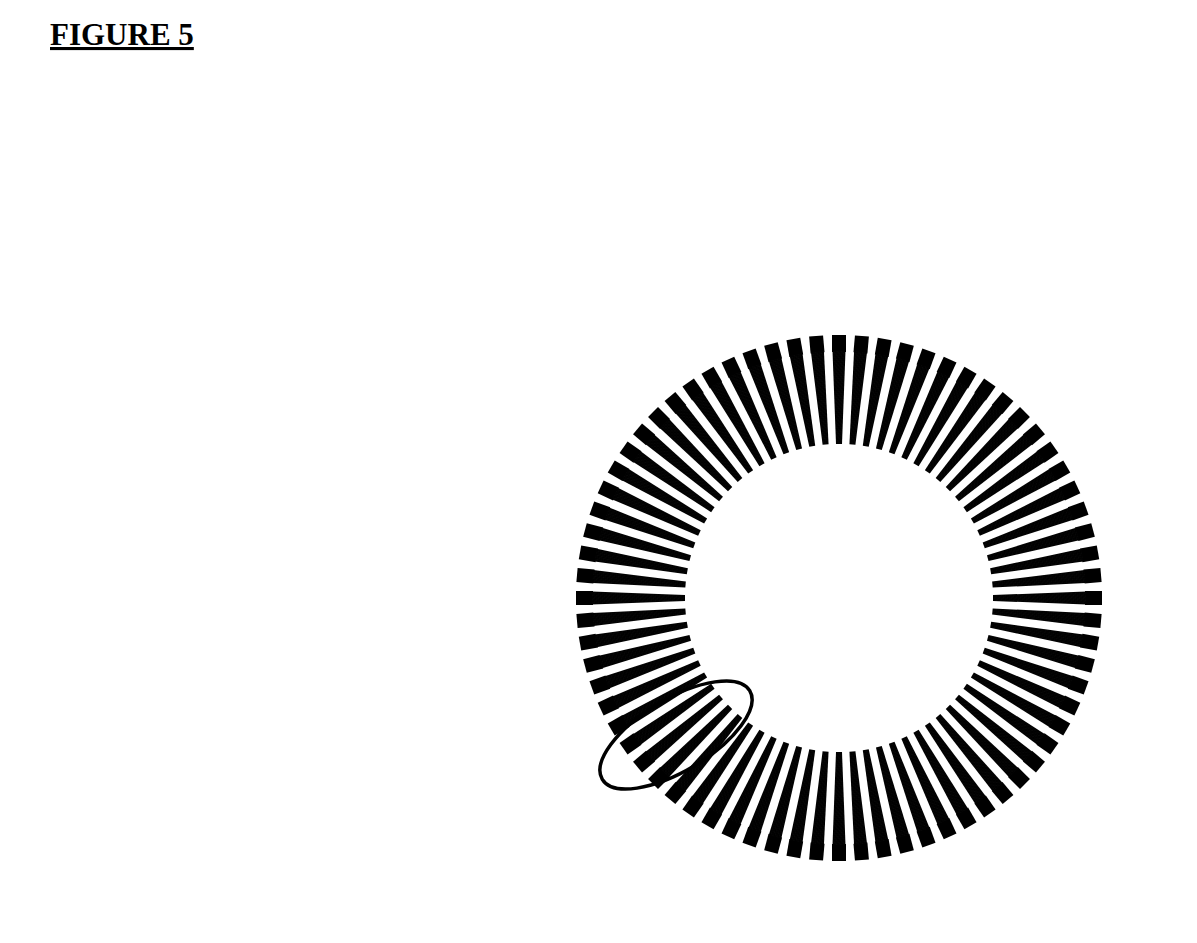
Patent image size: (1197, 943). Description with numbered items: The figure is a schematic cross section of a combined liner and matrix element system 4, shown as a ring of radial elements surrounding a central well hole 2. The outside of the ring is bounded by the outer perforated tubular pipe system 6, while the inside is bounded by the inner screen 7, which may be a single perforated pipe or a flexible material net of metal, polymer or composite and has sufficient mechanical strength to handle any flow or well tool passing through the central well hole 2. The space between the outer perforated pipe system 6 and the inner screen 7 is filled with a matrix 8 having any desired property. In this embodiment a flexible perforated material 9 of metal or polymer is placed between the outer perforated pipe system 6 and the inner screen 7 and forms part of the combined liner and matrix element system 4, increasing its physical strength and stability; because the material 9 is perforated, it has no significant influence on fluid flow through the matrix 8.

The central well hole 2 is at (890, 715).
The combined liner and matrix element system 4 is at (603, 762).
The outer perforated tubular pipe system 6 is at (968, 375).
The inner screen 7 is at (957, 500).
The matrix 8 is at (610, 520).
The flexible perforated material 9 is at (1007, 467).